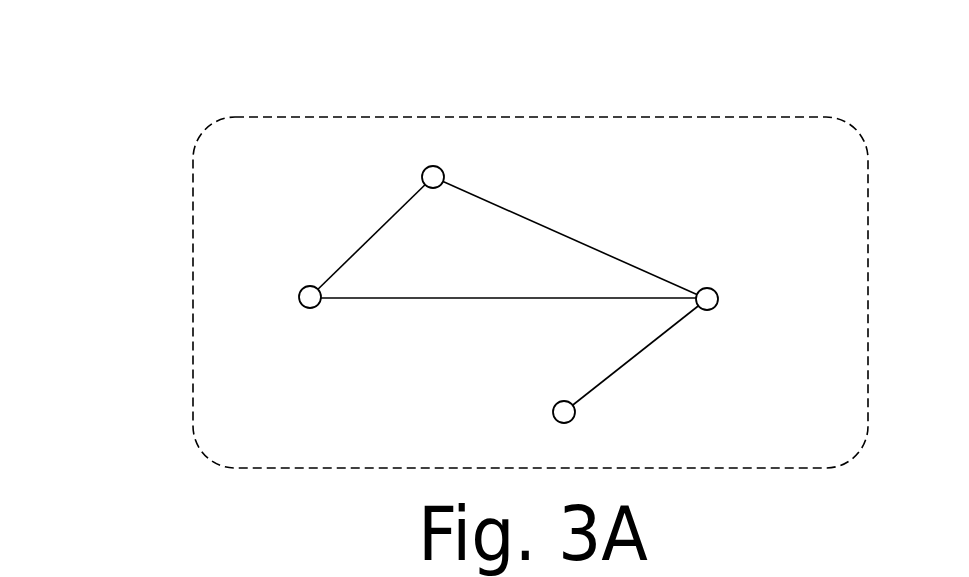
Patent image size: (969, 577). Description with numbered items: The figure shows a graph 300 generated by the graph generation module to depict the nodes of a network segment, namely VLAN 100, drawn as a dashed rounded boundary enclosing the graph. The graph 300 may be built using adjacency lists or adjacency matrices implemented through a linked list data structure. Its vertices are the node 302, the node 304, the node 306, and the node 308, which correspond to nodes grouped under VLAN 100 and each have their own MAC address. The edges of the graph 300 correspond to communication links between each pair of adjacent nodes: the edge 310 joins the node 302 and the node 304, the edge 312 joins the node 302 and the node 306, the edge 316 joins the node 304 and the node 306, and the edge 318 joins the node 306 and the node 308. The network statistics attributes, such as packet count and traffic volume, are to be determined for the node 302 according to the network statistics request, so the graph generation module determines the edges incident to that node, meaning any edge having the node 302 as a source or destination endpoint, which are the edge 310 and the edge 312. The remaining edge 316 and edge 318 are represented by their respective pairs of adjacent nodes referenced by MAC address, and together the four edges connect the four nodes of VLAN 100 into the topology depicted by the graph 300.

The graph 300 is at (438, 98).
The VLAN 100 is at (193, 308).
The node 302 is at (300, 306).
The node 304 is at (422, 173).
The node 306 is at (718, 300).
The node 308 is at (572, 421).
The edge 310 is at (327, 260).
The edge 312 is at (450, 298).
The edge 316 is at (570, 228).
The edge 318 is at (650, 353).